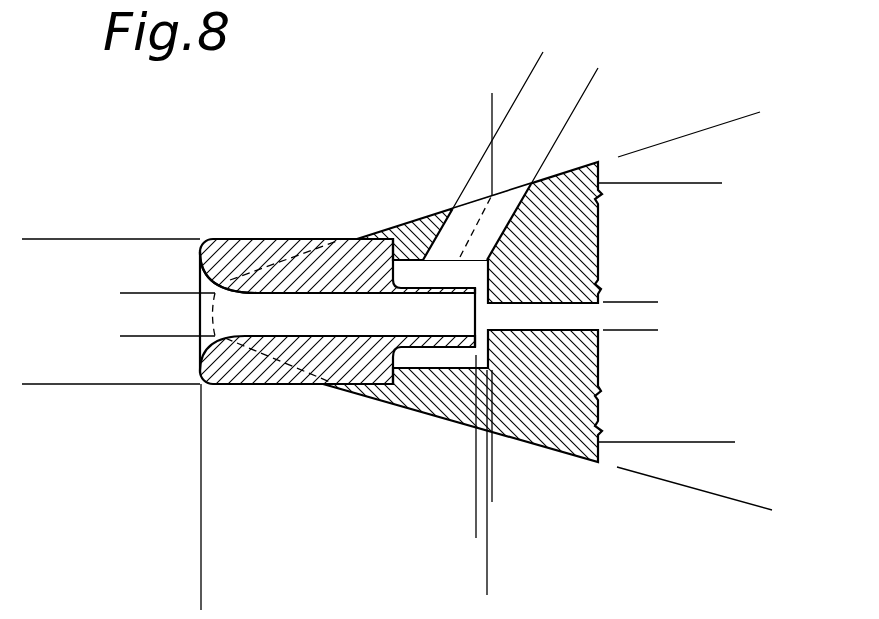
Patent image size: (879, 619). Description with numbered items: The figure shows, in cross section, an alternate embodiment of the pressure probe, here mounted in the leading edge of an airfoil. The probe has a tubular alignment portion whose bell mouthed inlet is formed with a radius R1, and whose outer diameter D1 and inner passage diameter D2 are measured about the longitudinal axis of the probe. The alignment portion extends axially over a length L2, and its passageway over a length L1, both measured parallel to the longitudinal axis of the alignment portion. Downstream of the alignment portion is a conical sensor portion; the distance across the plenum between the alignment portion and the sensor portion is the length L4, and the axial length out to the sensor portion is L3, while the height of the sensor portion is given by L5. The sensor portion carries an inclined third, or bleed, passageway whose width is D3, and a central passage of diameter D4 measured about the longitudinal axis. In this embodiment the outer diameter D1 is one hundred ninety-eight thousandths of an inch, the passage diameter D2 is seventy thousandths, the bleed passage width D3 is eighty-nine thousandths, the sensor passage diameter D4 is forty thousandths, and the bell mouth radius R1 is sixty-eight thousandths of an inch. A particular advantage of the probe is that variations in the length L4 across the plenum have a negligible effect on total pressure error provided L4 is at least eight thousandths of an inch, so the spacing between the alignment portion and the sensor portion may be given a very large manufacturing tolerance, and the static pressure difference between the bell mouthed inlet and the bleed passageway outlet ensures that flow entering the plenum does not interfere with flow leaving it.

The outer diameter of alignment portion D1 is at (68, 239).
The inner diameter of alignment portion passageway D2 is at (147, 248).
The width of bleed passageway D3 is at (628, 120).
The diameter of sensor portion passageway D4 is at (630, 375).
The length of alignment portion passageway L1 is at (476, 517).
The length of alignment portion L2 is at (492, 462).
The length of probe to sensor portion face L3 is at (487, 568).
The distance across plenum L4 is at (417, 489).
The height of sensor portion L5 is at (704, 183).
The bell mouth inlet radius R1 is at (222, 259).